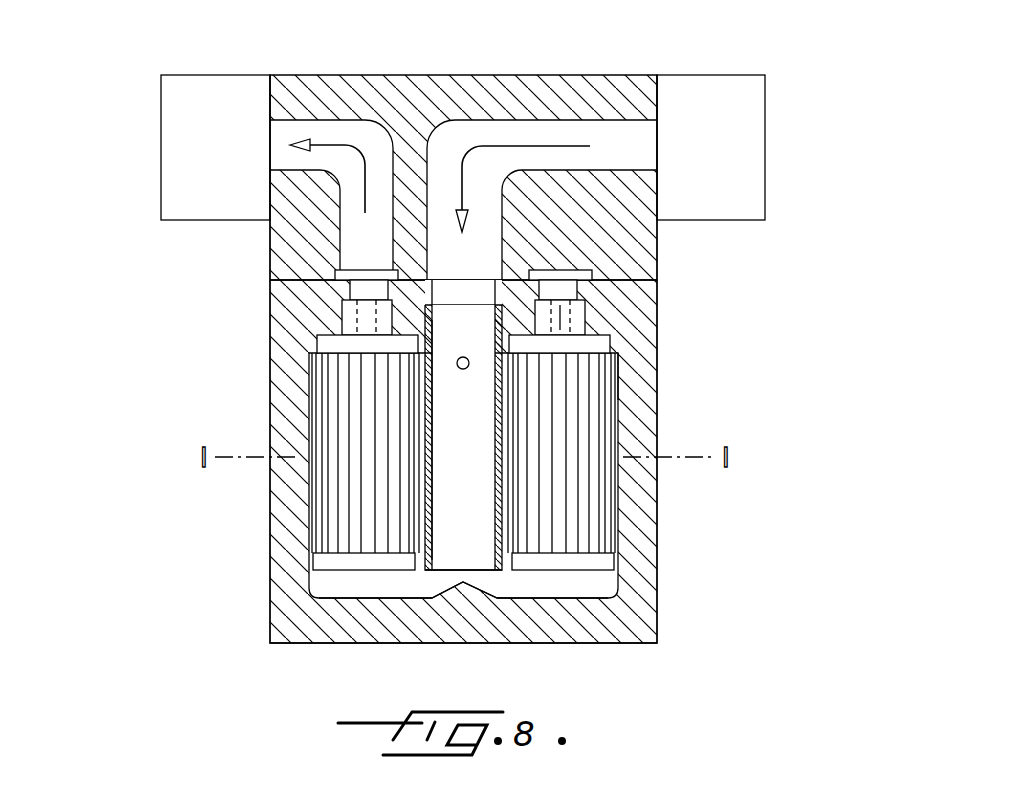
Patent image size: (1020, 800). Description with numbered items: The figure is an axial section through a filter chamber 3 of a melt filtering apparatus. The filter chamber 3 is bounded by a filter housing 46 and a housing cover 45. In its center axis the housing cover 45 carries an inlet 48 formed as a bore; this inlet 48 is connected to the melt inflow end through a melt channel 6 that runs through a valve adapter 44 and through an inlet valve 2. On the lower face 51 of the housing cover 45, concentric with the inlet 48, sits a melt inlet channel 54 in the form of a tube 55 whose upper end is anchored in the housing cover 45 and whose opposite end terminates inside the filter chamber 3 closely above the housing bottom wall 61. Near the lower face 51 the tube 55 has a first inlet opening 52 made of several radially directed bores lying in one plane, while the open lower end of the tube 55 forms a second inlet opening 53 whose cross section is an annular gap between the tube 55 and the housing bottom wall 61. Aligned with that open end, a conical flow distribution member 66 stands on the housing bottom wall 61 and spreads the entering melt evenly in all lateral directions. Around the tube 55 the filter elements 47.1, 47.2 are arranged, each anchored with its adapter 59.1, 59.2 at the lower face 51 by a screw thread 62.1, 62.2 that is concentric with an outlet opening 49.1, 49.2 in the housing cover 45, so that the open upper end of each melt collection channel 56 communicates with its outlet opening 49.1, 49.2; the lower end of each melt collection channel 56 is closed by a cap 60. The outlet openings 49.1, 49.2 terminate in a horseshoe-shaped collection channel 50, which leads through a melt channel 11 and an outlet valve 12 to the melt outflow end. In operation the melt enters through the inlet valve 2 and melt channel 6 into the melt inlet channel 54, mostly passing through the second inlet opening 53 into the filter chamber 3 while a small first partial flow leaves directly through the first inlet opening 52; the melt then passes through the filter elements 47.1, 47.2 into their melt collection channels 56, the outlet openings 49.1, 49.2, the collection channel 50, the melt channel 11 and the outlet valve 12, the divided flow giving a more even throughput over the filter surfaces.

The inlet valve 2 is at (752, 125).
The filter chamber 3 is at (328, 585).
The melt channel 6 is at (485, 128).
The melt channel 11 is at (307, 124).
The outlet valve 12 is at (172, 132).
The valve adapter 44 is at (645, 203).
The housing cover 45 is at (647, 297).
The filter housing 46 is at (650, 525).
The filter element 47.1 is at (608, 483).
The filter element 47.2 is at (328, 482).
The inlet 48 is at (462, 294).
The outlet opening 49.1 is at (565, 280).
The outlet opening 49.2 is at (345, 298).
The collection channel 50 is at (362, 275).
The lower face 51 is at (617, 360).
The first inlet opening 52 is at (458, 368).
The second inlet opening 53 is at (440, 570).
The melt inlet channel 54 is at (435, 472).
The tube 55 is at (425, 513).
The melt collection channel 56 is at (575, 322).
The adapter 59.1 is at (612, 350).
The adapter 59.2 is at (320, 345).
The cap 60 is at (600, 553).
The housing bottom wall 61 is at (625, 580).
The screw thread 62.1 is at (590, 313).
The screw thread 62.2 is at (345, 316).
The flow distribution member 66 is at (470, 590).